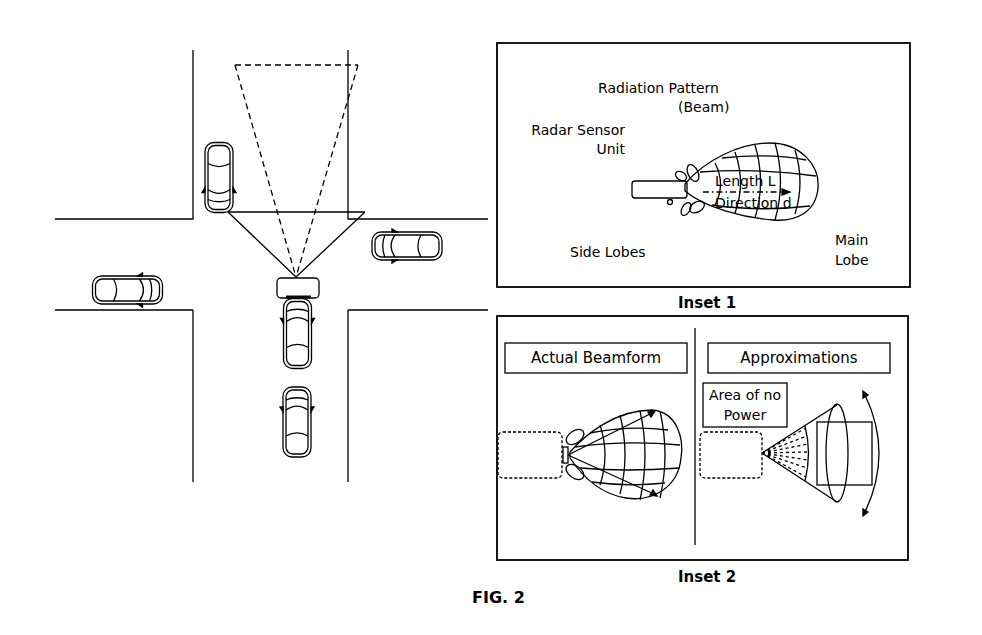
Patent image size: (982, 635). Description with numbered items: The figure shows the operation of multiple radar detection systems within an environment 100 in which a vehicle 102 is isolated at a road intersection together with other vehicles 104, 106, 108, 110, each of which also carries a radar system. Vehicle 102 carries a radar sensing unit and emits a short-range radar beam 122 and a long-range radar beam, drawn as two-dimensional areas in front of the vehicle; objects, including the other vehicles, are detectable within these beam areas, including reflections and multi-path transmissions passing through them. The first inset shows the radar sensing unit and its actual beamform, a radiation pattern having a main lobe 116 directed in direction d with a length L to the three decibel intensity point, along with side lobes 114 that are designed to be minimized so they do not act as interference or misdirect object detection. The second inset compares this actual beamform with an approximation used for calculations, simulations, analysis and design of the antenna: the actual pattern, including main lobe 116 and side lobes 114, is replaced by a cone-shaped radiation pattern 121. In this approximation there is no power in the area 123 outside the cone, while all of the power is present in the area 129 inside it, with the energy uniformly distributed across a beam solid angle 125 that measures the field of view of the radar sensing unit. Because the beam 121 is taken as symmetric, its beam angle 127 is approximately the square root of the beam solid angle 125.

The environment 100 is at (80, 24).
The vehicle 102 is at (282, 345).
The vehicle 104 is at (422, 257).
The vehicle 106 is at (282, 432).
The vehicle 108 is at (120, 277).
The vehicle 110 is at (205, 175).
The side lobes 114 is at (682, 222).
The main lobe 116 is at (809, 210).
The radiation pattern 121 is at (827, 498).
The short-range radar beam 122 is at (355, 210).
The area 123 is at (862, 392).
The beam solid angle 125 is at (790, 470).
The beam angle 127 is at (884, 441).
The area 129 is at (854, 486).